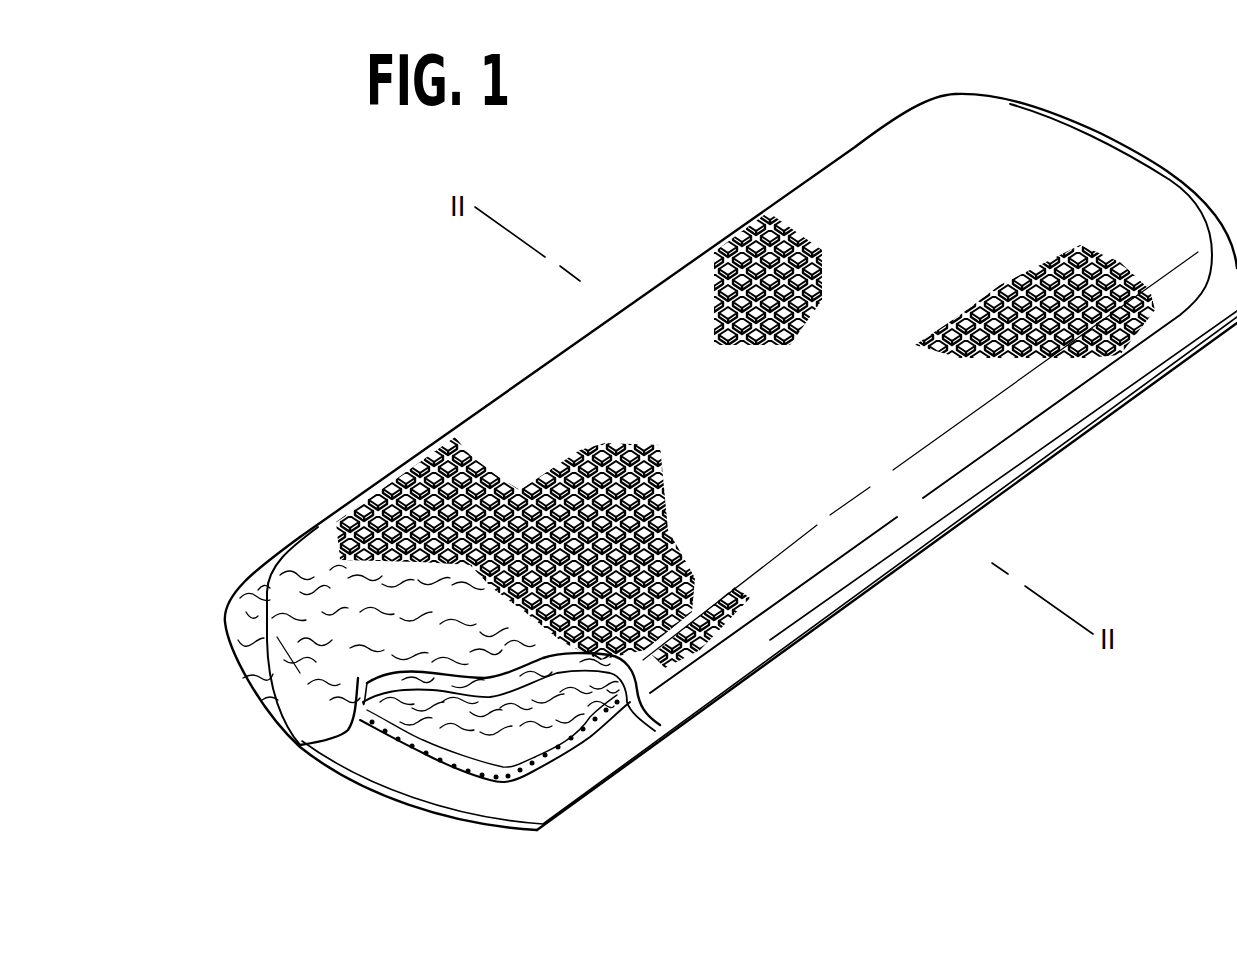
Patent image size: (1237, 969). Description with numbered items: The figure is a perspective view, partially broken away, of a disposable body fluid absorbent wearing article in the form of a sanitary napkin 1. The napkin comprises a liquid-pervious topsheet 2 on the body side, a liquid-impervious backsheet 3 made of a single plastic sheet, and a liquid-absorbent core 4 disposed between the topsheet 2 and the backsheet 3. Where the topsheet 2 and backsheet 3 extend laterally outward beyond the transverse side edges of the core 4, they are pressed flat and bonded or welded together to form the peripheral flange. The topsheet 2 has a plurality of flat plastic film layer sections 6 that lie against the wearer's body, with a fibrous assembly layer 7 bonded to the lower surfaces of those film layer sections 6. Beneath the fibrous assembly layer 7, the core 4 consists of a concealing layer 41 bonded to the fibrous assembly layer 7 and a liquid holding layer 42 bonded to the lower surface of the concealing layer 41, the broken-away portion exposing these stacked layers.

The sanitary napkin 1 is at (838, 124).
The liquid-pervious topsheet 2 is at (338, 452).
The liquid-impervious backsheet 3 is at (568, 810).
The liquid-absorbent core 4 is at (559, 729).
The flat plastic film layer sections 6 is at (368, 500).
The fibrous assembly layer 7 is at (318, 560).
The concealing layer 41 is at (643, 660).
The liquid holding layer 42 is at (529, 746).